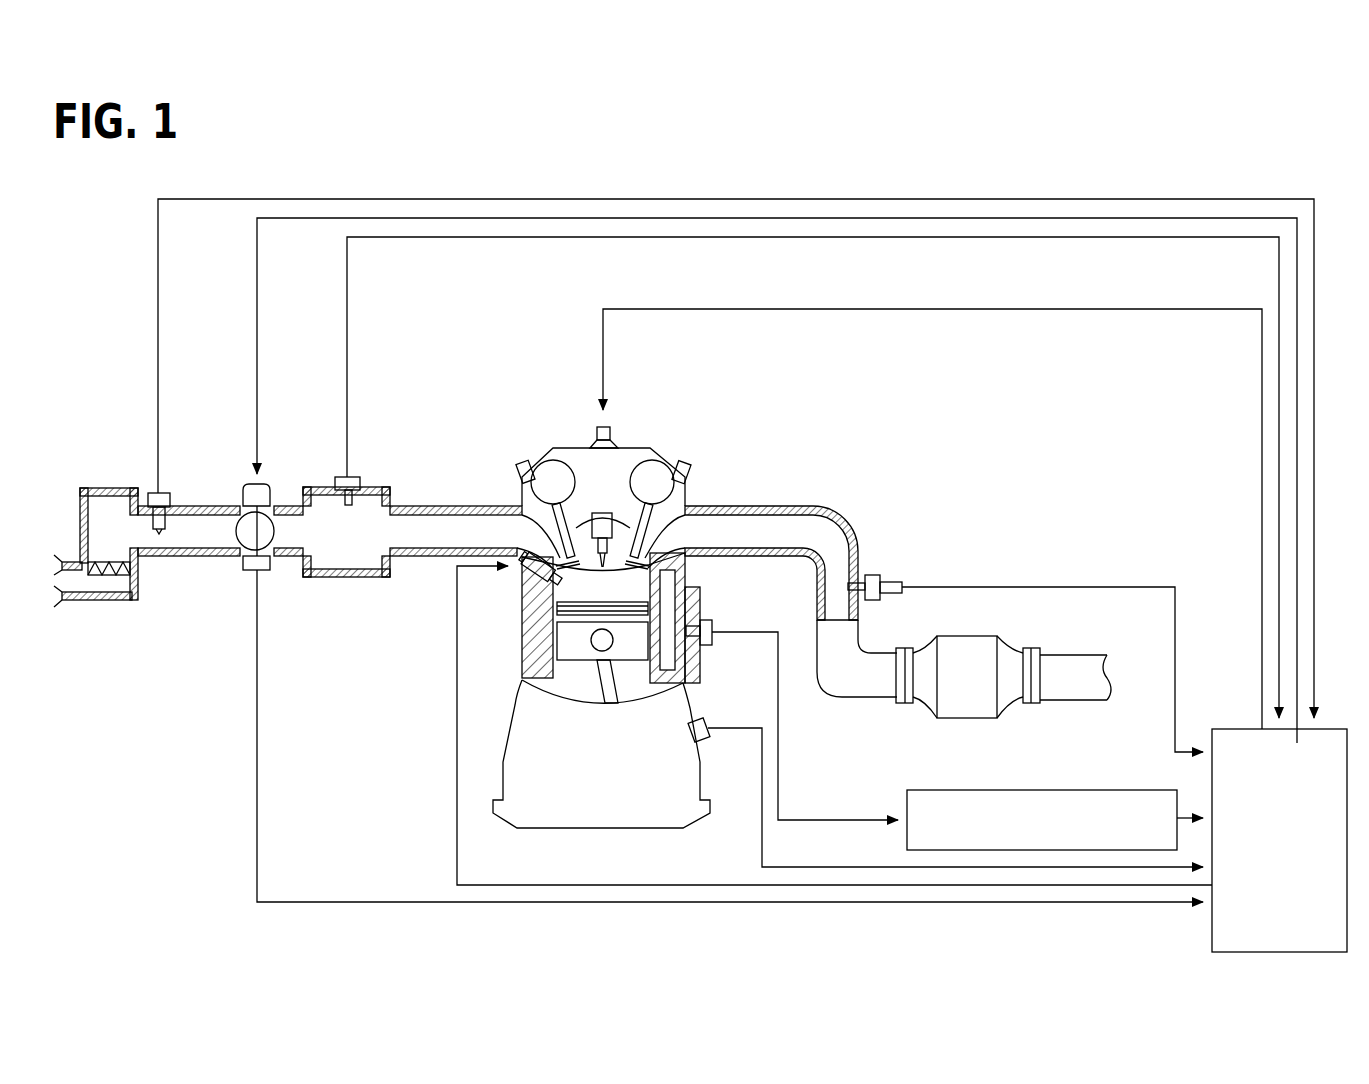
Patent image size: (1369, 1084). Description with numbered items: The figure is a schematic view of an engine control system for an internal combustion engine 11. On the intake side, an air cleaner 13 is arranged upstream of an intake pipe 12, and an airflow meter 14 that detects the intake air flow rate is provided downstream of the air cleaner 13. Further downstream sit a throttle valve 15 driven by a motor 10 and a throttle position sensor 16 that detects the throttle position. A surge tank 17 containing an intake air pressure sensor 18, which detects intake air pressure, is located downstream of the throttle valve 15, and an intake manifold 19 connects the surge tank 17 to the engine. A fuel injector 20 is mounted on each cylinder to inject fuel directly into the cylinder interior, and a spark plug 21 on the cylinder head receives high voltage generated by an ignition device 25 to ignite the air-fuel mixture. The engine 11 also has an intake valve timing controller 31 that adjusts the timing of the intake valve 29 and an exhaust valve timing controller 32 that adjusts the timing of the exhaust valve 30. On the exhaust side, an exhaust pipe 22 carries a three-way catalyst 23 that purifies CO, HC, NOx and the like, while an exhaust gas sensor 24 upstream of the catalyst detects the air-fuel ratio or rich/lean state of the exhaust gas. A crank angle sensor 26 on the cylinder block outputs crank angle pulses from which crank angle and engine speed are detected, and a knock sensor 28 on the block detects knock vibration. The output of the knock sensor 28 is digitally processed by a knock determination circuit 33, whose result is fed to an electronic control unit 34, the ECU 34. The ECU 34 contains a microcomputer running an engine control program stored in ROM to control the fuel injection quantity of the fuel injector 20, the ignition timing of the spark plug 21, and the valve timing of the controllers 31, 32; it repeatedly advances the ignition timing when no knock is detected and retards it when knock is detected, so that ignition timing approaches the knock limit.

The motor 10 is at (270, 494).
The internal combustion engine 11 is at (655, 448).
The intake pipe 12 is at (207, 506).
The air cleaner 13 is at (104, 578).
The airflow meter 14 is at (148, 493).
The throttle valve 15 is at (268, 540).
The throttle position sensor 16 is at (247, 570).
The surge tank 17 is at (307, 488).
The intake air pressure sensor 18 is at (360, 478).
The intake manifold 19 is at (440, 506).
The fuel injector 20 is at (522, 593).
The spark plug 21 is at (612, 447).
The exhaust pipe 22 is at (805, 506).
The three-way catalyst 23 is at (995, 636).
The exhaust gas sensor 24 is at (880, 575).
The ignition device 25 is at (597, 427).
The crank angle sensor 26 is at (705, 720).
The knock sensor 28 is at (714, 625).
The intake valve 29 is at (527, 555).
The exhaust valve 30 is at (660, 548).
The intake valve timing controller 31 is at (549, 448).
The exhaust valve timing controller 32 is at (672, 465).
The knock determination circuit 33 is at (1040, 790).
The electronic control unit 34 is at (1212, 930).